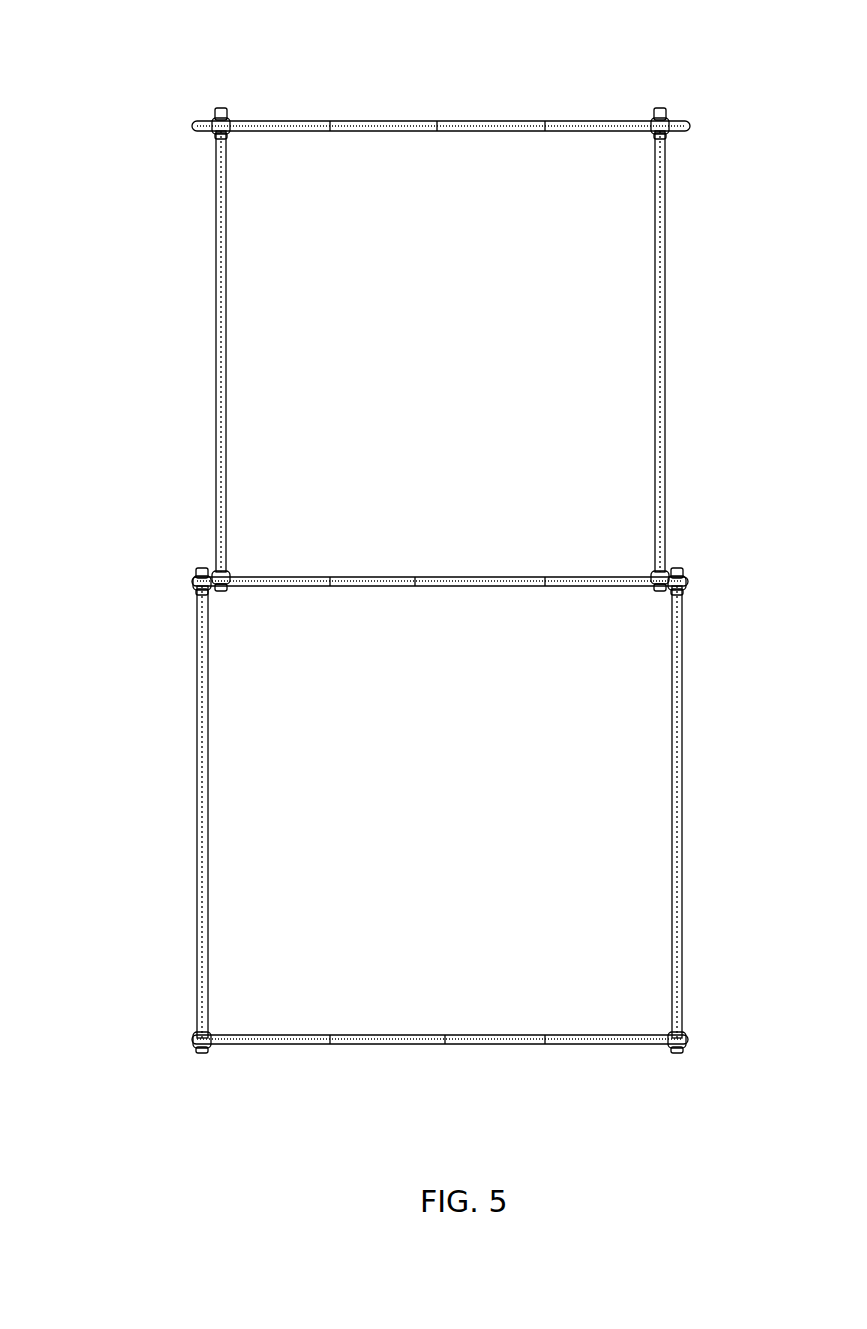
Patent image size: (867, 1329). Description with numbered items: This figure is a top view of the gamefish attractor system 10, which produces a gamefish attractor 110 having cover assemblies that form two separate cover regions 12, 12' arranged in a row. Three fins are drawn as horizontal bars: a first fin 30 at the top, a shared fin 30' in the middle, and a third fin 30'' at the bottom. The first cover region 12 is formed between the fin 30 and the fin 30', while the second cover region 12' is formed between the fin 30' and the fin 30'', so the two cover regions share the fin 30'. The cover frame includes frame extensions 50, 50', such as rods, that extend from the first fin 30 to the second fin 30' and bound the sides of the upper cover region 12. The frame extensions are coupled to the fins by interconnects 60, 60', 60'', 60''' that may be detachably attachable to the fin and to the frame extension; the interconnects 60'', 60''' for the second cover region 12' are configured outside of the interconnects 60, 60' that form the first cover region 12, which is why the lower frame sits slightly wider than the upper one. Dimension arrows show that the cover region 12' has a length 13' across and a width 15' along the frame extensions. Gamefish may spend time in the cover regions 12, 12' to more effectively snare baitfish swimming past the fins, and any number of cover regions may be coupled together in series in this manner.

The gamefish attractor system 10 is at (150, 71).
The first cover region 12 is at (434, 305).
The second cover region 12' is at (490, 775).
The fin 30 is at (441, 84).
The fin 30' is at (440, 542).
The fin 30'' is at (440, 999).
The frame extension 50 is at (165, 351).
The frame extension 50' is at (715, 351).
The interconnect 60 is at (245, 77).
The interconnect 60' is at (683, 80).
The interconnect 60'' is at (162, 557).
The interconnect 60''' is at (688, 538).
The gamefish attractor 110 is at (297, 560).
The length 13' is at (438, 649).
The width 15' is at (536, 808).